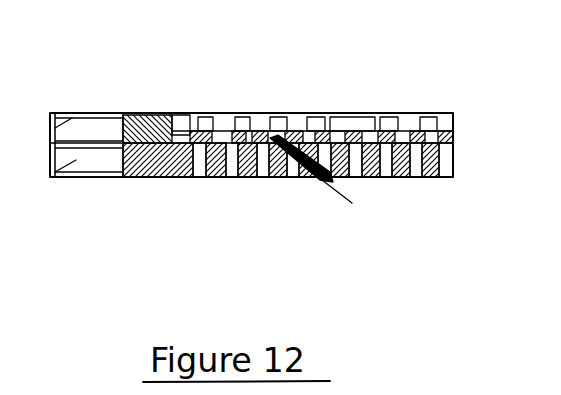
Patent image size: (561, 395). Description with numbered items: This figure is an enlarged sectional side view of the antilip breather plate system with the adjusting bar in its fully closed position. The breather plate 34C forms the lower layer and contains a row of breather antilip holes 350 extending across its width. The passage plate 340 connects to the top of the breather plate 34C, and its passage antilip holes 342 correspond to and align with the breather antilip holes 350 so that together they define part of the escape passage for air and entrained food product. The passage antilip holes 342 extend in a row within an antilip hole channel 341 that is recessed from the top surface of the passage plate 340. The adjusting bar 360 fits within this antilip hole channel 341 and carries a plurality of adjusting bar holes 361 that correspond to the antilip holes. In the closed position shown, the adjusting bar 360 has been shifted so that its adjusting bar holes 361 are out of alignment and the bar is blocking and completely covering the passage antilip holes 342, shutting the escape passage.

The antilip hole channel 341 is at (453, 145).
The passage plate 340 is at (150, 113).
The breather plate 34C is at (155, 177).
The passage antilip holes 342 is at (403, 180).
The breather antilip holes 350 is at (233, 177).
The adjusting bar 360 is at (235, 128).
The adjusting bar holes 361 is at (213, 128).